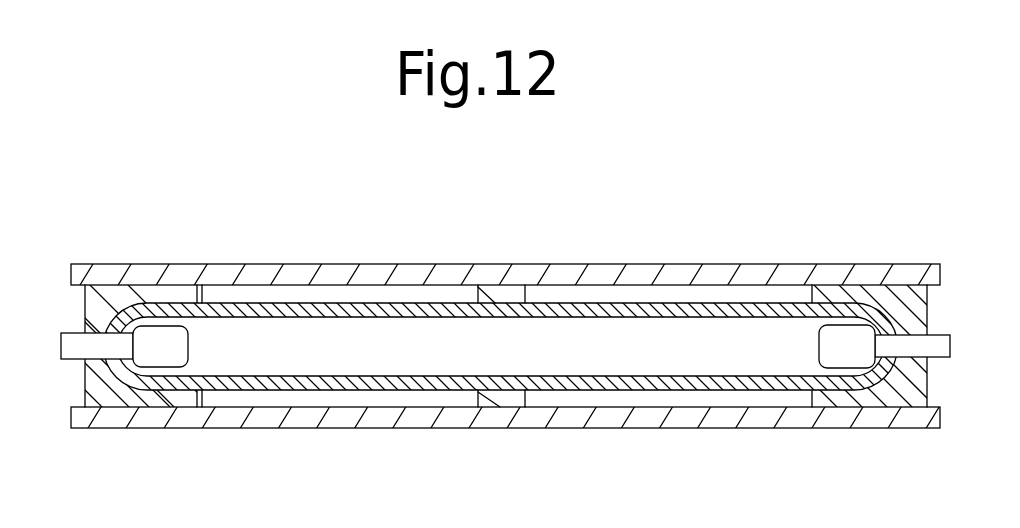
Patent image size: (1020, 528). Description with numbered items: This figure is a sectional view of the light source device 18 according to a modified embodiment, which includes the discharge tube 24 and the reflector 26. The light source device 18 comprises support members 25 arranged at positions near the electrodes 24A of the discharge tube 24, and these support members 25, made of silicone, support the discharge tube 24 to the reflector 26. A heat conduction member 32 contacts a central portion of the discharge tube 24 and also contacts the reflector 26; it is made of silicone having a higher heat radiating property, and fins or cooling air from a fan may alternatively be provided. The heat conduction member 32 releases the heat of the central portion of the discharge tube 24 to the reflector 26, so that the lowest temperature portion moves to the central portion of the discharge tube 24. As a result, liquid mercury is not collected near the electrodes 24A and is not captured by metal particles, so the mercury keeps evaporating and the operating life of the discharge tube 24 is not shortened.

The light source device 18 is at (676, 242).
The discharge tube 24 is at (415, 306).
The electrodes 24A is at (187, 333).
The support members 25 is at (163, 295).
The reflector 26 is at (518, 289).
The heat conduction member 32 is at (532, 282).